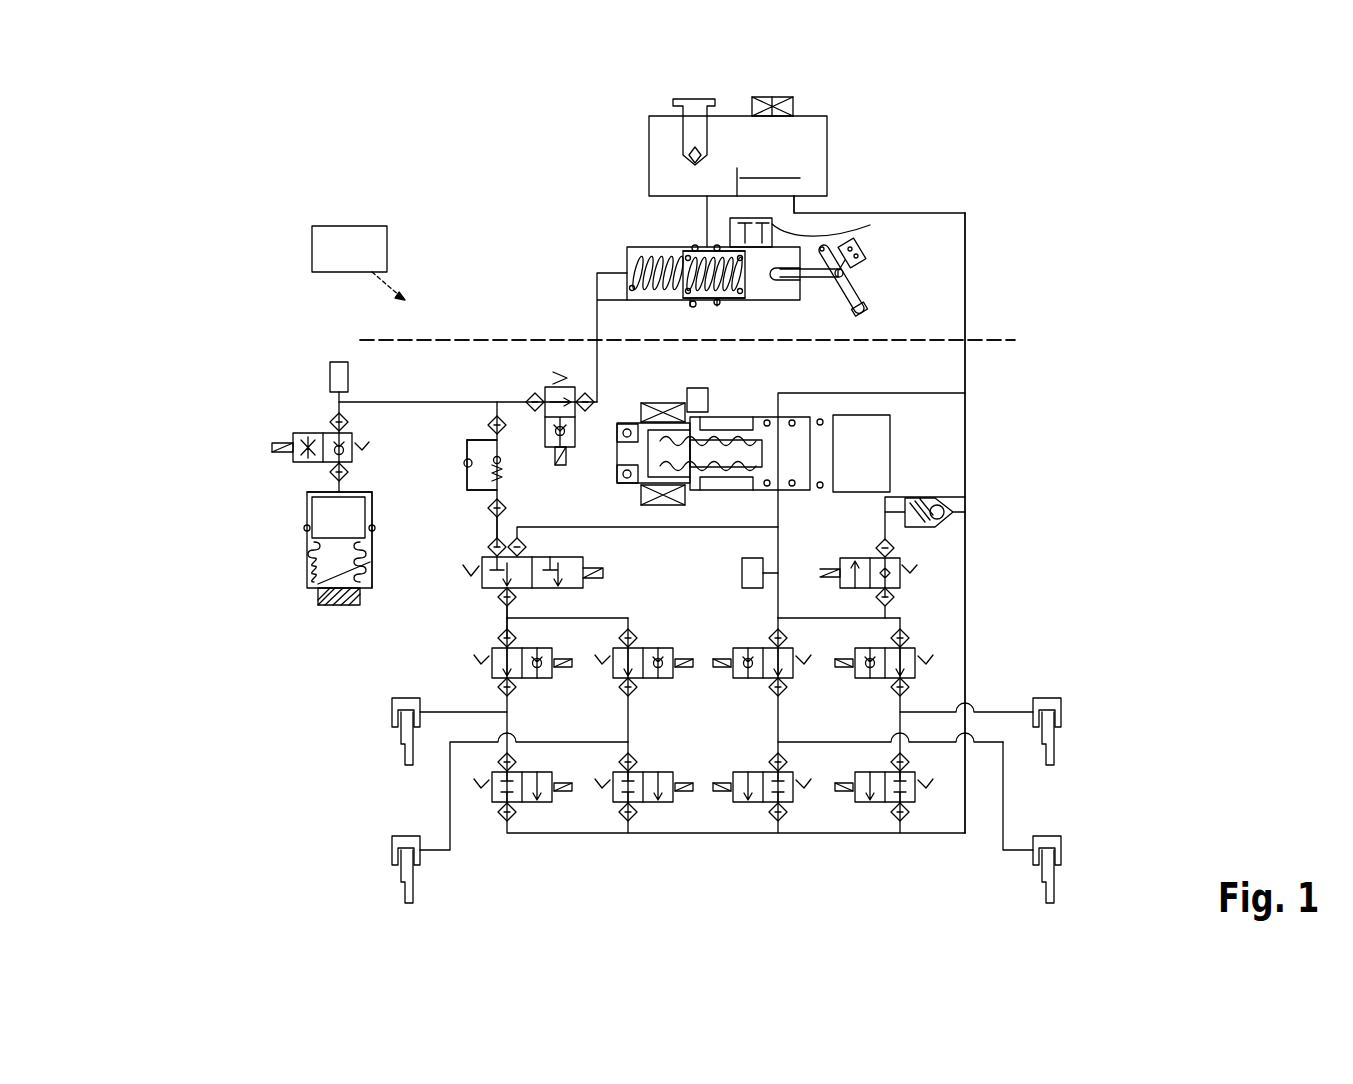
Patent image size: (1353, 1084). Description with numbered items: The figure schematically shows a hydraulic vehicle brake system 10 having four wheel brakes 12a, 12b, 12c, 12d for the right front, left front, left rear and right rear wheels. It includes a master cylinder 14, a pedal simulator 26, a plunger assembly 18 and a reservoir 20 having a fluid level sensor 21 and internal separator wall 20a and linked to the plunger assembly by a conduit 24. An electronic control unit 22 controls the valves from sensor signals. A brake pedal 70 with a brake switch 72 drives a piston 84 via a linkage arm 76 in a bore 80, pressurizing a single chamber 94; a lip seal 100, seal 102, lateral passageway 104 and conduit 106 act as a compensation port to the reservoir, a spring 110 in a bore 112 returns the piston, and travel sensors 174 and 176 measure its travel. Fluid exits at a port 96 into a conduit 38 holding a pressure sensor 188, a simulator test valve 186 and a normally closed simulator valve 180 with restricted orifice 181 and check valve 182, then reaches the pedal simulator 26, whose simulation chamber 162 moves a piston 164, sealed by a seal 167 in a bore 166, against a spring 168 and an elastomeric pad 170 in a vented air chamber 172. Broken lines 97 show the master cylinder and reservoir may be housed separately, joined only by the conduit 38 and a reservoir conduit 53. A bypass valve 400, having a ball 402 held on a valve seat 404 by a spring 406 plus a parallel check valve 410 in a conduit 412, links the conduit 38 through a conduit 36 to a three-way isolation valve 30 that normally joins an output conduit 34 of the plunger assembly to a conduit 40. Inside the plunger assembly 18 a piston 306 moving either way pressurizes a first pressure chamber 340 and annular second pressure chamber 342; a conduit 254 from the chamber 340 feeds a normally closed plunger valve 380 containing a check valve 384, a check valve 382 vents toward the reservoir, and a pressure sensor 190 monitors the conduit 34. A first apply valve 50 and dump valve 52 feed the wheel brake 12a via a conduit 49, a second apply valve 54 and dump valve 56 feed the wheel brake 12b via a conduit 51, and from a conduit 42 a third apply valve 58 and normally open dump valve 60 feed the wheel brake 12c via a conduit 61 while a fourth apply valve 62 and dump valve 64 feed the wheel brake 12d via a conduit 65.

The brake system 10 is at (1113, 202).
The wheel brake 12a is at (392, 712).
The wheel brake 12b is at (392, 850).
The wheel brake 12c is at (1060, 850).
The wheel brake 12d is at (1060, 711).
The master cylinder 14 is at (890, 214).
The plunger assembly 18 is at (732, 403).
The fluid reservoir 20 is at (618, 148).
The internal separator wall 20a is at (740, 178).
The fluid level sensor 21 is at (795, 108).
The electronic control unit 22 is at (352, 226).
The conduit 24 is at (907, 343).
The pedal simulator 26 is at (293, 496).
The isolation valve 30 is at (600, 618).
The output conduit 34 is at (590, 572).
The conduit 36 is at (495, 530).
The conduit 38 is at (600, 285).
The conduit 40 is at (512, 613).
The conduit 42 is at (780, 560).
The conduit 49 is at (455, 711).
The first apply valve 50 is at (475, 660).
The conduit 51 is at (455, 850).
The first dump valve 52 is at (530, 803).
The reservoir conduit 53 is at (965, 283).
The second apply valve 54 is at (600, 657).
The second dump valve 56 is at (650, 803).
The third apply valve 58 is at (737, 647).
The third dump valve 60 is at (790, 803).
The conduit 61 is at (1000, 840).
The fourth apply valve 62 is at (915, 653).
The fourth dump valve 64 is at (863, 803).
The conduit 65 is at (986, 710).
The brake pedal 70 is at (865, 298).
The brake sensor or switch 72 is at (862, 250).
The linkage arm 76 is at (840, 278).
The bore 80 is at (685, 255).
The piston 84 is at (820, 278).
The pressure chamber 94 is at (655, 262).
The port 96 is at (690, 280).
The broken lines 97 is at (465, 425).
The lip seal 100 is at (700, 305).
The seal 102 is at (707, 302).
The lateral passageway 104 is at (695, 243).
The conduit 106 is at (707, 200).
The spring 110 is at (690, 302).
The bore 112 is at (730, 302).
The simulation pressure chamber 162 is at (310, 492).
The piston 164 is at (320, 505).
The bore 166 is at (310, 570).
The seal 167 is at (305, 528).
The spring 168 is at (370, 563).
The elastomeric pad 170 is at (317, 607).
The air-filled chamber 172 is at (310, 580).
The travel sensor 174 is at (770, 215).
The travel sensor 176 is at (870, 225).
The simulator valve 180 is at (296, 435).
The restricted orifice 181 is at (293, 447).
The check valve 182 is at (330, 437).
The simulator test valve 186 is at (548, 387).
The pressure sensor 188 is at (333, 360).
The pressure sensor 190 is at (740, 570).
The conduit 254 is at (890, 498).
The piston 306 is at (833, 433).
The first pressure chamber 340 is at (878, 440).
The second pressure chamber 342 is at (793, 487).
The plunger valve 380 is at (897, 560).
The check valve 382 is at (955, 510).
The check valve 384 is at (893, 588).
The bypass valve 400 is at (467, 450).
The ball 402 is at (500, 460).
The valve seat 404 is at (472, 440).
The spring 406 is at (462, 465).
The check valve 410 is at (453, 402).
The conduit 412 is at (470, 492).